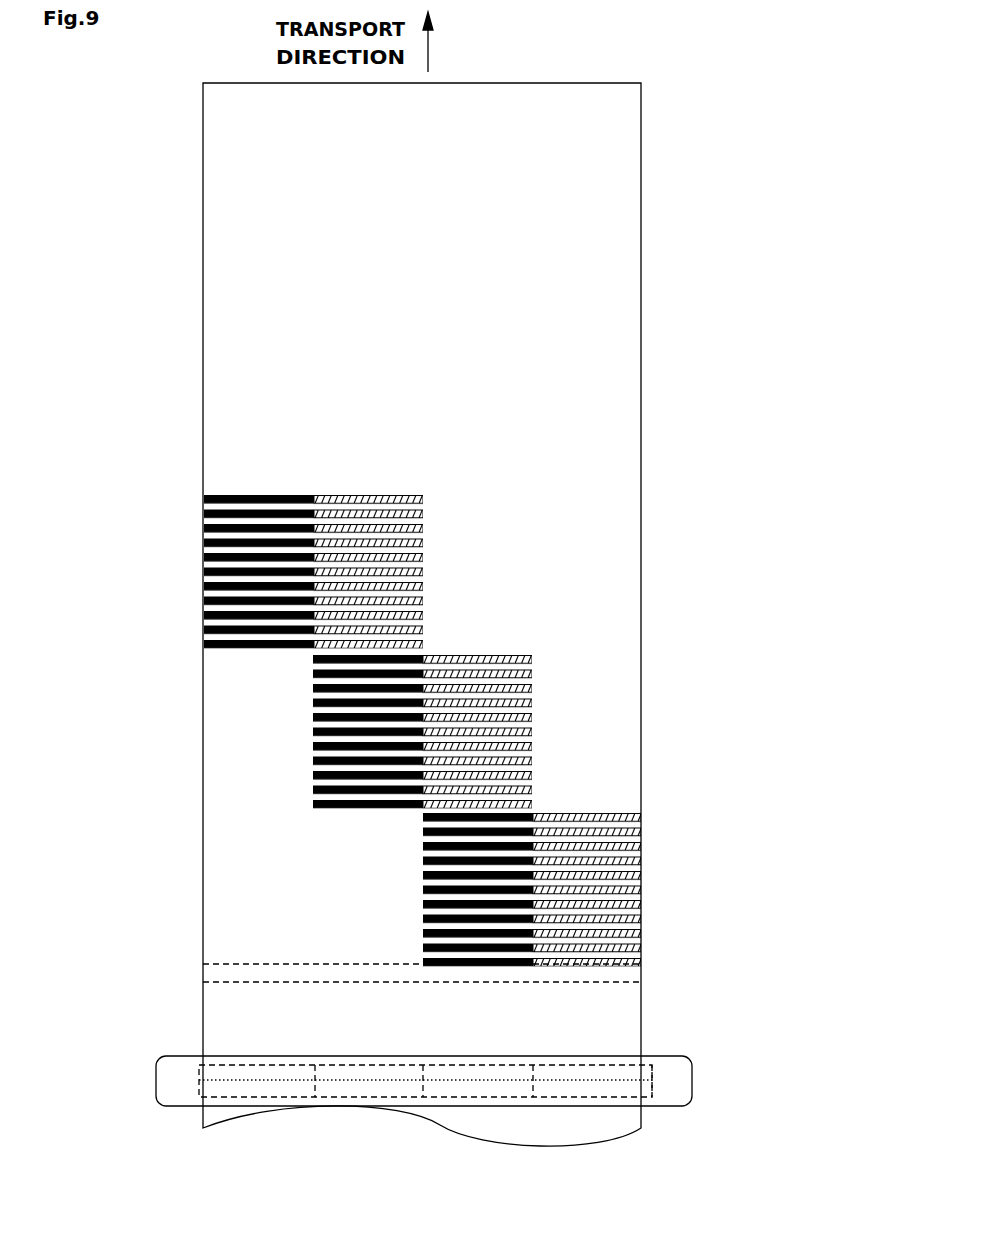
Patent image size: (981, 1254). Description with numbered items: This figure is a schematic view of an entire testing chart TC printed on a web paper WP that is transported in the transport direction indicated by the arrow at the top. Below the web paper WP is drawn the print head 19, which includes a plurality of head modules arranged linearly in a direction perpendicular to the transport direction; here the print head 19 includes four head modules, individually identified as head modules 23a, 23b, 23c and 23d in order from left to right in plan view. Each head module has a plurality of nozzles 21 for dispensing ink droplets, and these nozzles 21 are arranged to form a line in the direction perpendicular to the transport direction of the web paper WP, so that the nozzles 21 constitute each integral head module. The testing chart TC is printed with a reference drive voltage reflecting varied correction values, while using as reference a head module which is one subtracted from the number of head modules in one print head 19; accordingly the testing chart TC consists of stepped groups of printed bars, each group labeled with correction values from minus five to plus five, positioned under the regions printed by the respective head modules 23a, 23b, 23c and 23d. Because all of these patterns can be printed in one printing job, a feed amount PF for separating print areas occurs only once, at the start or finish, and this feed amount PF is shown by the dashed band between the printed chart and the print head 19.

The web paper WP is at (210, 98).
The testing chart TC is at (178, 553).
The feed amount PF is at (201, 962).
The print head 19 is at (682, 1076).
The nozzles 21 is at (218, 1081).
The head module 23a is at (256, 1062).
The head module 23b is at (381, 1062).
The head module 23c is at (478, 1062).
The head module 23d is at (585, 1062).